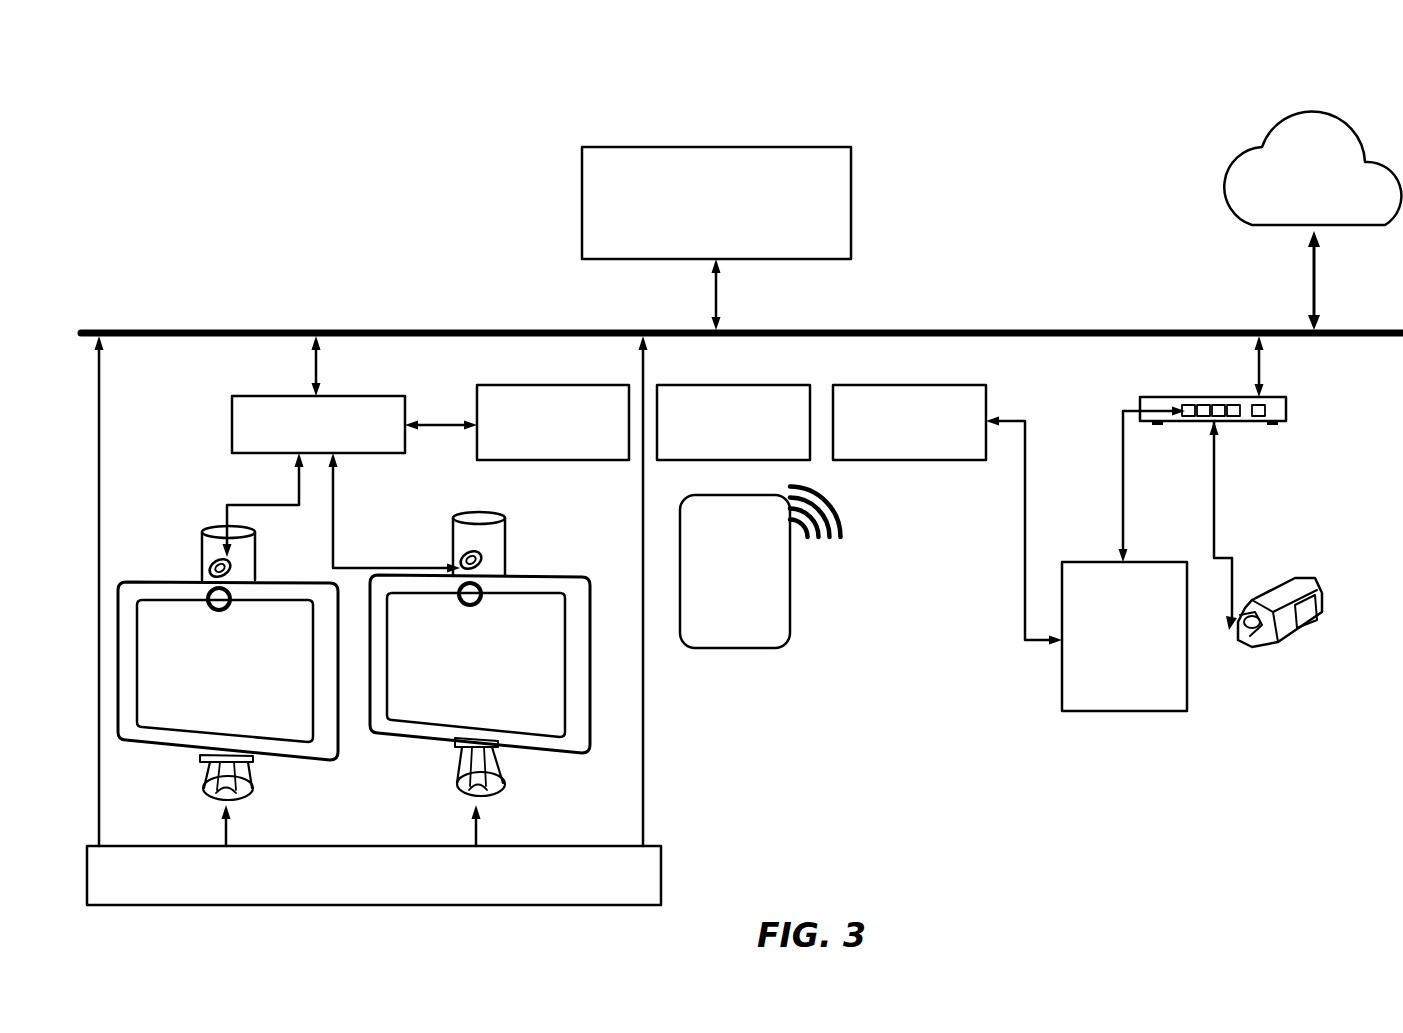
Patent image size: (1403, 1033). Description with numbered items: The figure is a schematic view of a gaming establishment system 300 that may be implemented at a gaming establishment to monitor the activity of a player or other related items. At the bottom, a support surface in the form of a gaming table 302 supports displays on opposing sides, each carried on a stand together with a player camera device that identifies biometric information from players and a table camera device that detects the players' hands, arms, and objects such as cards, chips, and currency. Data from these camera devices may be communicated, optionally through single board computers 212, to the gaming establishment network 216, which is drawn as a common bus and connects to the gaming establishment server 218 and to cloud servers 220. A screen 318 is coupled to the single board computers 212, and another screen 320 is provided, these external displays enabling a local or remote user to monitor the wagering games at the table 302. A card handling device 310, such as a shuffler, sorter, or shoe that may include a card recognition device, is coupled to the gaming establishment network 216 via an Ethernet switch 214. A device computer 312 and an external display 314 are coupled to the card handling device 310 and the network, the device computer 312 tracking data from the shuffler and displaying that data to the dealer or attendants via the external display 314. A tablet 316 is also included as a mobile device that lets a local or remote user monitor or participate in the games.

The gaming establishment system 300 is at (1070, 130).
The gaming establishment network 216 is at (222, 330).
The gaming establishment server 218 is at (716, 203).
The cloud servers 220 is at (1237, 183).
The Ethernet switch 214 is at (1287, 406).
The single board computers 212 is at (318, 424).
The screen 318 is at (553, 422).
The screen 320 is at (733, 422).
The external display 314 is at (909, 422).
The tablet 316 is at (760, 568).
The device computer 312 is at (1124, 636).
The card handling device 310 is at (1288, 592).
The gaming table 302 is at (374, 875).